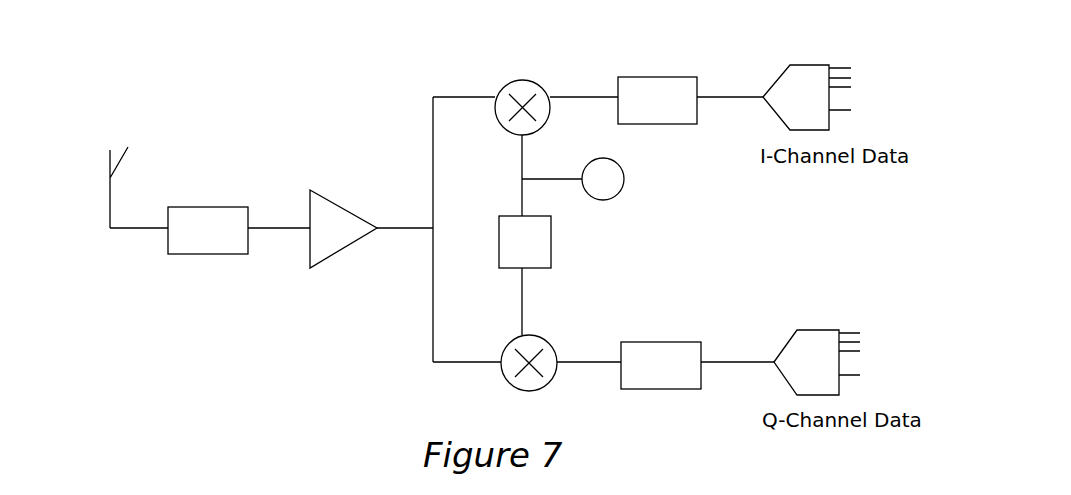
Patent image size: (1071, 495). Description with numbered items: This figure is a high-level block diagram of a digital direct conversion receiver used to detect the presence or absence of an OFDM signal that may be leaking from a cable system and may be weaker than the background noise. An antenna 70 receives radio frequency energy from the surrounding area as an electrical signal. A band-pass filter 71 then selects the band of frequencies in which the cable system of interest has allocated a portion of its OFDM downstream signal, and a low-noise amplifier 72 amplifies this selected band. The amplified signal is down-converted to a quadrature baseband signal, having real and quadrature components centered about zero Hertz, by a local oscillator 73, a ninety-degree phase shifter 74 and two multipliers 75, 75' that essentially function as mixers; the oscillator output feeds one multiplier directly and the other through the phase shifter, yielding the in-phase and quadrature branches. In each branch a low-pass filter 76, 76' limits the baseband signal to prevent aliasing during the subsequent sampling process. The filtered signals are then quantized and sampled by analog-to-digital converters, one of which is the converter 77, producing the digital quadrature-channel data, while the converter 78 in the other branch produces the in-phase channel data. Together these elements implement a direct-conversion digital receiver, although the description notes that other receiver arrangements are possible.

The antenna 70 is at (122, 158).
The band-pass-filter (BPF) 71 is at (210, 207).
The low-noise amplifier (LNA) 72 is at (333, 200).
The local oscillator 73 is at (624, 180).
The 90° phase shifter 74 is at (551, 240).
The multiplier 75 is at (546, 346).
The multiplier 75' is at (546, 89).
The low-pass filter (LPF) 76 is at (665, 336).
The low-pass filter (LPF) 76' is at (664, 71).
The analog-to-digital converter (ADC) 77 is at (808, 330).
The I-channel analog-to-digital converter (ADC) 78 is at (800, 64).